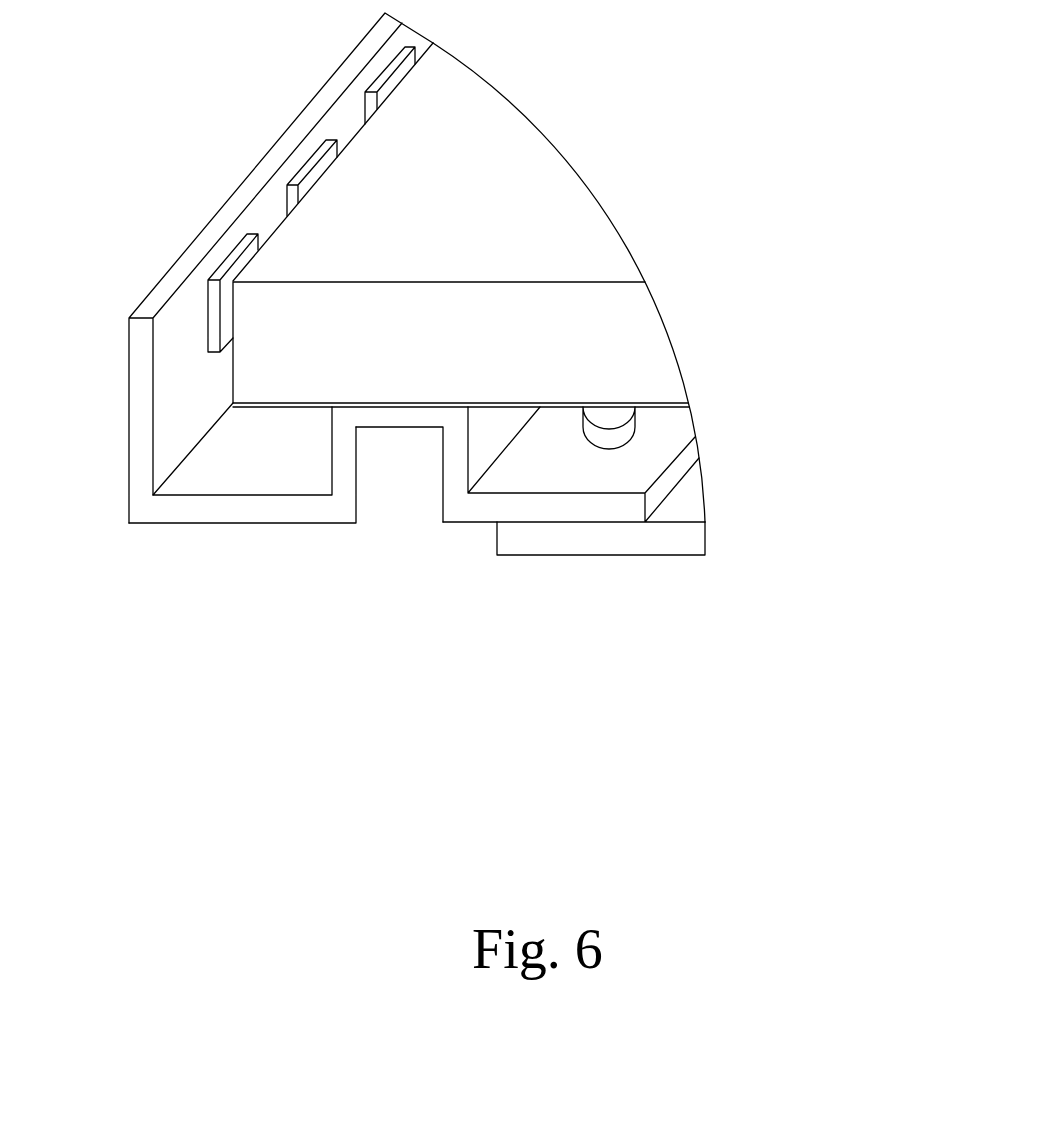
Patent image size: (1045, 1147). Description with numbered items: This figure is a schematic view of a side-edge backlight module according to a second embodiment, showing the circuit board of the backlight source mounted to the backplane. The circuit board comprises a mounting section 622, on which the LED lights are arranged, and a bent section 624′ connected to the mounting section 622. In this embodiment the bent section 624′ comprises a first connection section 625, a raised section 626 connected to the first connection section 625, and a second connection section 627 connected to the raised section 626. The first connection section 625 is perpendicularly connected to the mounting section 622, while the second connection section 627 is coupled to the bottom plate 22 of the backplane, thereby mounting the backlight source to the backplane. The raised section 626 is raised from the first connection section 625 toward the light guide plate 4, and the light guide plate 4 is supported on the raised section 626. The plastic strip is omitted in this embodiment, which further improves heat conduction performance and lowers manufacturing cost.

The light guide plate 4 is at (462, 183).
The bottom plate 22 is at (688, 540).
The mounting section 622 is at (133, 415).
The bent section 624′ is at (417, 588).
The first connection section 625 is at (222, 512).
The raised section 626 is at (403, 422).
The second connection section 627 is at (574, 550).